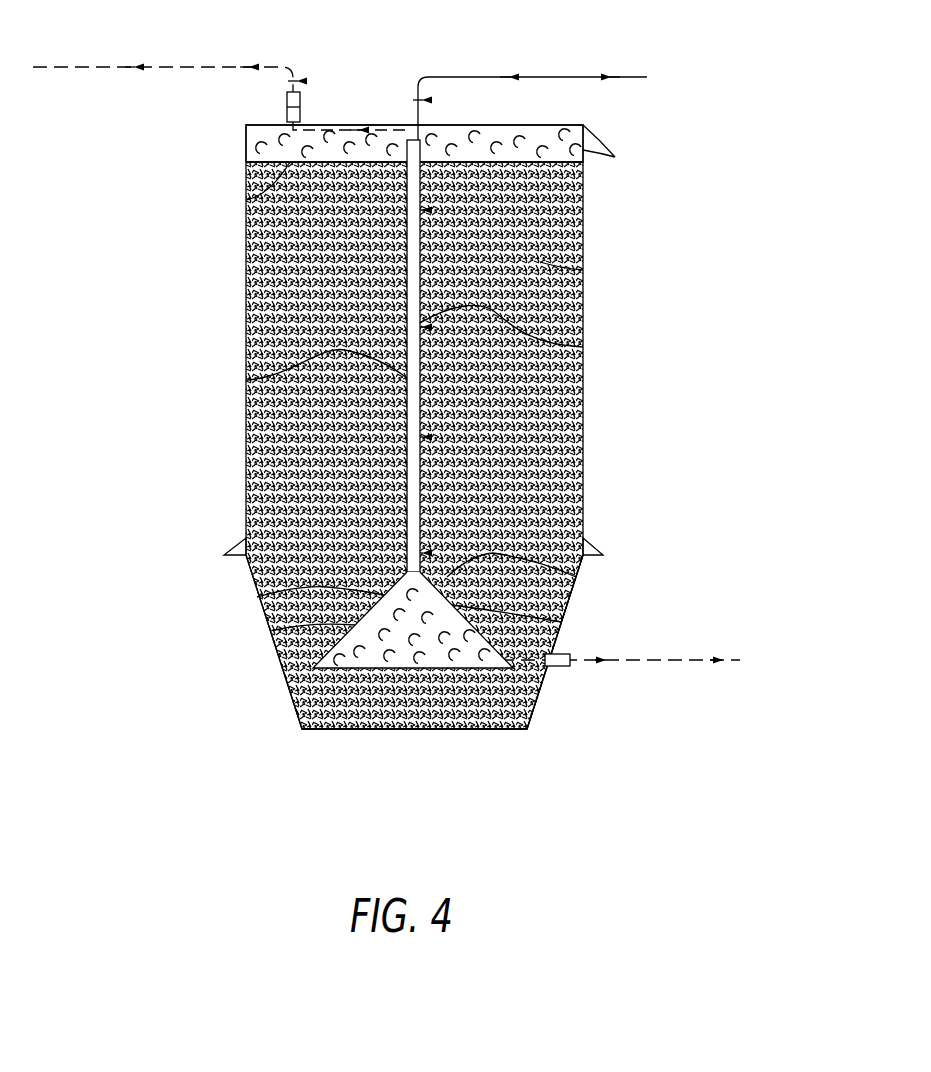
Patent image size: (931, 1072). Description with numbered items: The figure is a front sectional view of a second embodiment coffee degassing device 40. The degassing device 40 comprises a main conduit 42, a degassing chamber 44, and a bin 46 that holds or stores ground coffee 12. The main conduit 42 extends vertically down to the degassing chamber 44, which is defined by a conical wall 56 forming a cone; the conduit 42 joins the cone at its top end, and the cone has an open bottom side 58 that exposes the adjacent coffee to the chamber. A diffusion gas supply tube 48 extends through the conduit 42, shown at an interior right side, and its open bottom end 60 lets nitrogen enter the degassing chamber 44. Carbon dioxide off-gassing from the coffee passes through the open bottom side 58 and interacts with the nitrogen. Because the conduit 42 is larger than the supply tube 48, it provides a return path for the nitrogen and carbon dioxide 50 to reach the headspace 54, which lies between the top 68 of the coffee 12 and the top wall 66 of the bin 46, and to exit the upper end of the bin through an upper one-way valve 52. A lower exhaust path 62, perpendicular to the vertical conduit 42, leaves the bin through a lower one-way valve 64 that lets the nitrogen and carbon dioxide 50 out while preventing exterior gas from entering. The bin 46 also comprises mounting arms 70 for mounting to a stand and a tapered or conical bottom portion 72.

The ground coffee 12 is at (583, 270).
The degassing device 40 is at (724, 113).
The main conduit 42 is at (300, 372).
The degassing chamber 44 is at (278, 636).
The bin 46 is at (583, 405).
The diffusion gas supply tube 48 is at (460, 77).
The nitrogen and carbon dioxide 50 is at (172, 67).
The upper one-way valve 52 is at (300, 100).
The headspace 54 is at (263, 162).
The conical wall 56 is at (270, 598).
The open bottom side 58 is at (384, 672).
The bottom end of the tube 60 is at (568, 575).
The lower exhaust path 62 is at (528, 712).
The lower one-way valve 64 is at (547, 668).
The top wall 66 is at (268, 125).
The top of the coffee 68 is at (246, 200).
The mounting arms 70 is at (235, 545).
The tapered bottom portion 72 is at (283, 668).